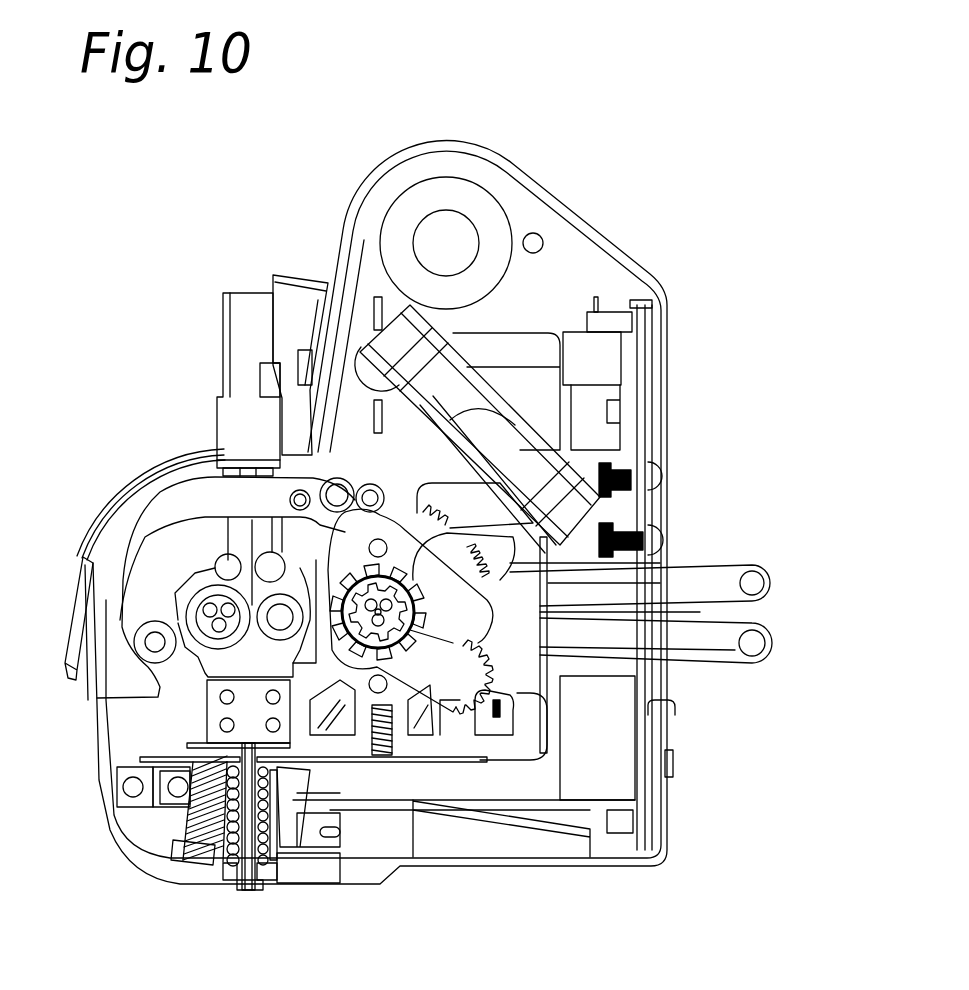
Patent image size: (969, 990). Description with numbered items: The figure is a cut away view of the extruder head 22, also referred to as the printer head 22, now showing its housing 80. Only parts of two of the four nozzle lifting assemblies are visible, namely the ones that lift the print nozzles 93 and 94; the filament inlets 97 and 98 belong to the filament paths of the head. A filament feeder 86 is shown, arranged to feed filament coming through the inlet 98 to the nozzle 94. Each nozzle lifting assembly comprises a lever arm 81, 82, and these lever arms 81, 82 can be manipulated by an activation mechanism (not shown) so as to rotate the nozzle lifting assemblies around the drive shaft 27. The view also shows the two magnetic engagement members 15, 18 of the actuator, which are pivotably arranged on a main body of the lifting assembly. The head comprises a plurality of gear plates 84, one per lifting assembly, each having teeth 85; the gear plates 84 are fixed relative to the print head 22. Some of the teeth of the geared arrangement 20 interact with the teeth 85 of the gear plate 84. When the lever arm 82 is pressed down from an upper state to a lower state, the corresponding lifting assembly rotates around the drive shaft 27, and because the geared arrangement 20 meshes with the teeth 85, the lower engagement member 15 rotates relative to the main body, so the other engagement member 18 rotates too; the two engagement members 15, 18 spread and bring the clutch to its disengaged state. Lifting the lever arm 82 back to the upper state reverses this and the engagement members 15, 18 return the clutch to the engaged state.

The extruder head 22 is at (563, 108).
The filament inlet 97 is at (280, 280).
The filament inlet 98 is at (223, 318).
The filament feeder 86 is at (245, 585).
The drive shaft 27 is at (377, 600).
The housing 80 is at (660, 355).
The lever arm 82 is at (722, 577).
The lever arm 81 is at (720, 655).
The magnetic engagement member 18 is at (473, 620).
The teeth 85 is at (485, 690).
The magnetic engagement member 15 is at (440, 675).
The geared arrangement 20 is at (458, 705).
The gear plate 84 is at (503, 742).
The print nozzle 93 is at (203, 867).
The print nozzle 94 is at (250, 890).